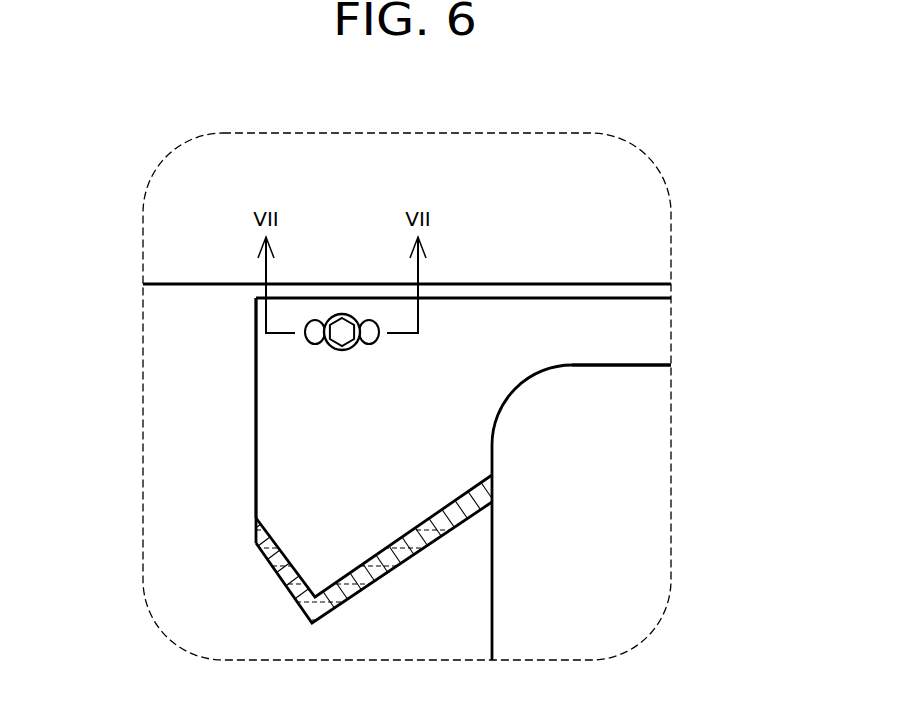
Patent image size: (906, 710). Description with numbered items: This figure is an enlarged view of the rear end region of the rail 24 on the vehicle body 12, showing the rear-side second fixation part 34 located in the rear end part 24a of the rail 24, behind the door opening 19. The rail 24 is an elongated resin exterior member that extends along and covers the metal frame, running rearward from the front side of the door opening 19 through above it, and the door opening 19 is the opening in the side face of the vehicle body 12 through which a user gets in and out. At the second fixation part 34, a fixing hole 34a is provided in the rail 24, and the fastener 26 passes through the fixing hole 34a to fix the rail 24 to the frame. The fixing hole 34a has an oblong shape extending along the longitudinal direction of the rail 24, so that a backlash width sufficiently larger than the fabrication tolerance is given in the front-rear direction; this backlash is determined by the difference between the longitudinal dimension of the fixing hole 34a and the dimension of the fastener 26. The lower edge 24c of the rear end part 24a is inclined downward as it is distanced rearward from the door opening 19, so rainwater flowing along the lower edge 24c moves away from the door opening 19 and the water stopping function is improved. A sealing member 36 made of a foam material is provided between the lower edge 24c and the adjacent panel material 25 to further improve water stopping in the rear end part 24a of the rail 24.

The second fixation part 34 is at (681, 129).
The vehicle body 12 is at (623, 289).
The rail 24 is at (633, 338).
The door opening 19 is at (613, 365).
The rear end part 24a is at (257, 457).
The lower edge 24c is at (257, 547).
The panel material 25 is at (207, 585).
The sealing member 36 is at (297, 590).
The fixing hole 34a is at (315, 346).
The fastener 26 is at (342, 351).